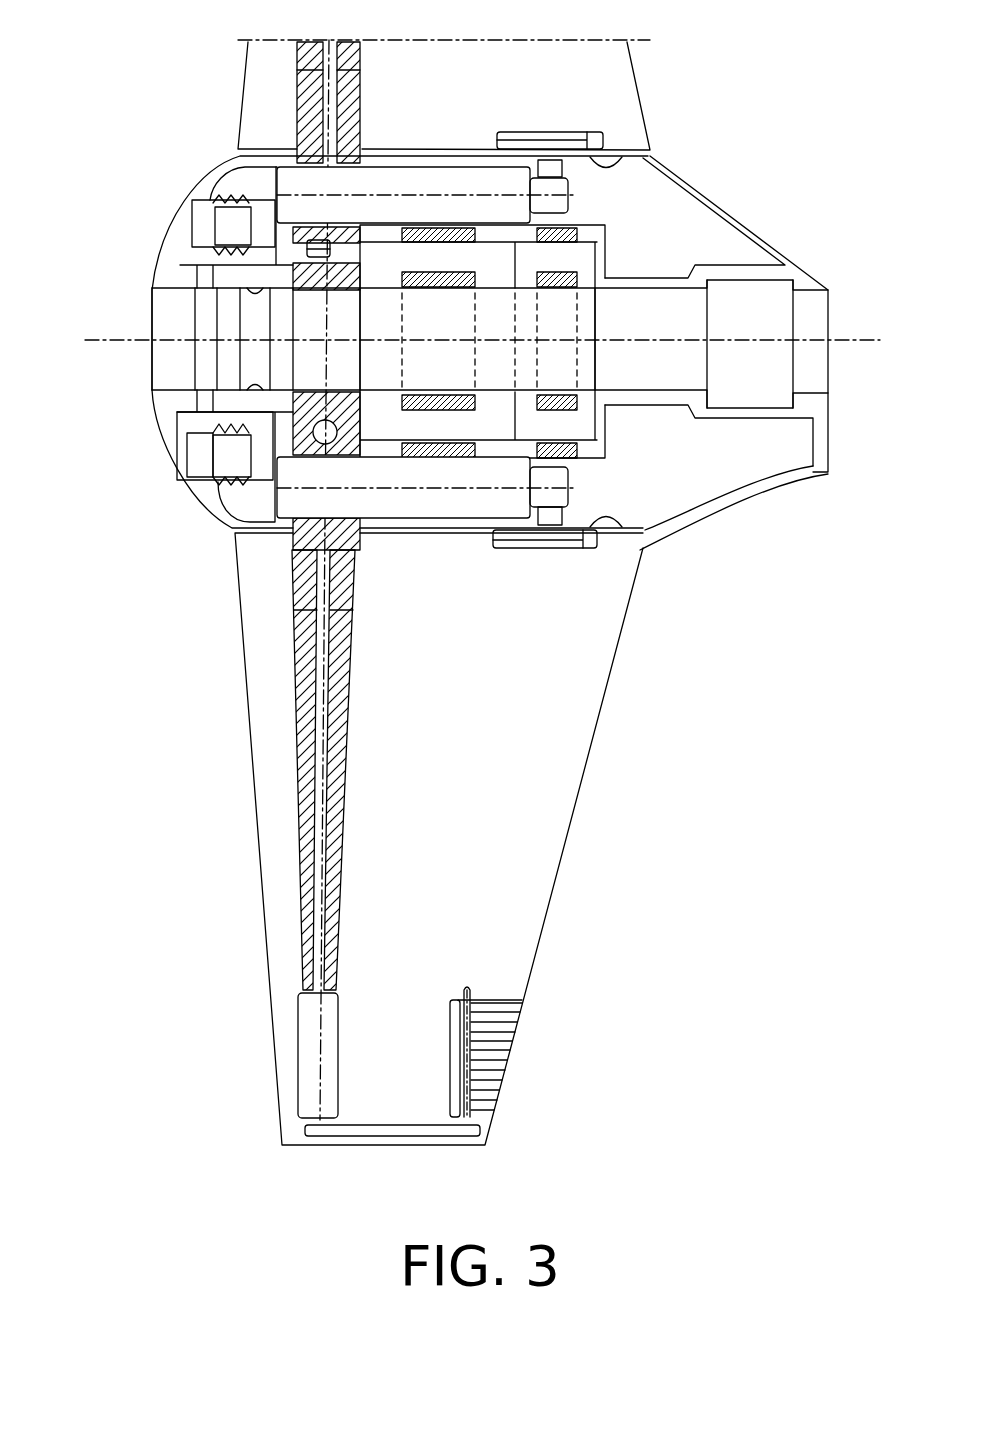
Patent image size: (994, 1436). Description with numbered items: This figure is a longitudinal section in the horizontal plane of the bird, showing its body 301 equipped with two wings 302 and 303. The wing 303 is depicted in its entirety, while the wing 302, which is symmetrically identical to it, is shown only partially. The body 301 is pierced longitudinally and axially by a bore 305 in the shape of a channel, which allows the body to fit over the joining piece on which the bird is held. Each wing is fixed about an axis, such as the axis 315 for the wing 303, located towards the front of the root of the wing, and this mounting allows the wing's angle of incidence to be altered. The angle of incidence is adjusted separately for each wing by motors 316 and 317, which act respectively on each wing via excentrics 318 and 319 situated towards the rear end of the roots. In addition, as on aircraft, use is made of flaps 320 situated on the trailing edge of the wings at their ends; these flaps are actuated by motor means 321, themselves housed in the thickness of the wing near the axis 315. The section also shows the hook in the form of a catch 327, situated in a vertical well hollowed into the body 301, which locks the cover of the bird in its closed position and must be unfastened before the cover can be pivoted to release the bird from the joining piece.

The body 301 is at (700, 218).
The wing 302 is at (606, 74).
The wing 303 is at (560, 752).
The bore 305 is at (142, 354).
The axis 315 is at (310, 663).
The motor 316 is at (553, 480).
The motor 317 is at (566, 183).
The excentric 318 is at (592, 524).
The excentric 319 is at (628, 148).
The flap 320 is at (492, 1053).
The motor means 321 is at (312, 1066).
The catch 327 is at (320, 238).